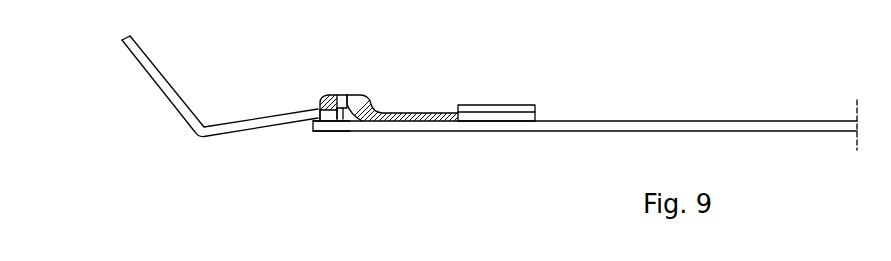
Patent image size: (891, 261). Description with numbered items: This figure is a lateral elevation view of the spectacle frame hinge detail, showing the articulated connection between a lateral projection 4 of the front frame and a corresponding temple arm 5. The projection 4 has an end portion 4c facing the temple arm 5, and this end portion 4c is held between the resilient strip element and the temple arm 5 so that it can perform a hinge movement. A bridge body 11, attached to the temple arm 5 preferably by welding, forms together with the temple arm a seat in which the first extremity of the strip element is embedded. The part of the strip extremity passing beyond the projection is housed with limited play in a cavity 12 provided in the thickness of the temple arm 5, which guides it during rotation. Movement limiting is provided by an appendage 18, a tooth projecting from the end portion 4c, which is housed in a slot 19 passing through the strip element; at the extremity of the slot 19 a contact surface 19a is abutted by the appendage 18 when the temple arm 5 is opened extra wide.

The lateral projection 4 is at (251, 128).
The end portion of projection 4c is at (340, 107).
The temple arm 5 is at (622, 127).
The bridge body 11 is at (507, 105).
The cavity 12 is at (322, 121).
The appendage 18 is at (339, 95).
The slot 19 is at (349, 93).
The contact surface 19a is at (336, 94).